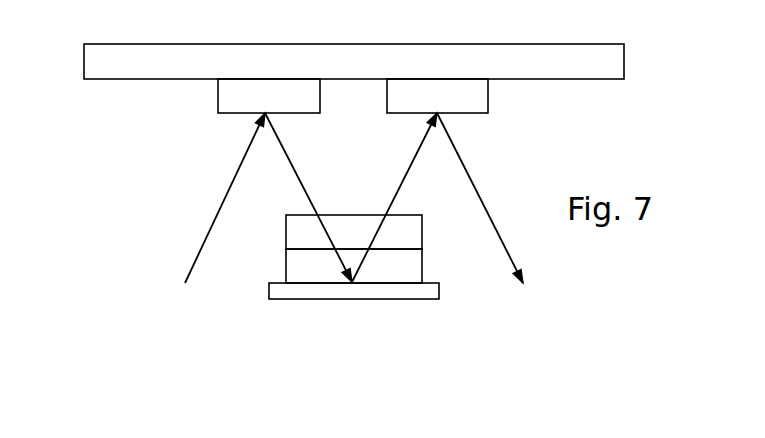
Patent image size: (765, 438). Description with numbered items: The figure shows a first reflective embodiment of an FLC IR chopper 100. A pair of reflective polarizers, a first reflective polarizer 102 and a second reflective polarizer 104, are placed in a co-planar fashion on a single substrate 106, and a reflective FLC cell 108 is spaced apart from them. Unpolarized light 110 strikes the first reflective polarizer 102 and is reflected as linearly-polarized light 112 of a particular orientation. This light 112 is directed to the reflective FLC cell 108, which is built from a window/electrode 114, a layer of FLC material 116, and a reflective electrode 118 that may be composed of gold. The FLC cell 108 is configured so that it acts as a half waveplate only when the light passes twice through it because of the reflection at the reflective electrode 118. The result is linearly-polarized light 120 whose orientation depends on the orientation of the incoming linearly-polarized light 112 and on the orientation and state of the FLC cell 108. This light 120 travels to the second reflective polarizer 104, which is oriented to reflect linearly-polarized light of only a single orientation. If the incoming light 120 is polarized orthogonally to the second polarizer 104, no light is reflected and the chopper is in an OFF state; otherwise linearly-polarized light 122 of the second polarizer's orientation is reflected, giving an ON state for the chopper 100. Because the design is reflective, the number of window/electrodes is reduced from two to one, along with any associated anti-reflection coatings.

The FLC IR chopper 100 is at (104, 184).
The first reflective polarizer 102 is at (252, 94).
The second reflective polarizer 104 is at (425, 92).
The substrate 106 is at (550, 62).
The reflective FLC cell 108 is at (260, 255).
The unpolarized light 110 is at (218, 208).
The linearly-polarized light 112 is at (307, 178).
The window/electrode 114 is at (410, 233).
The layer of FLC material 116 is at (410, 269).
The reflective electrode 118 is at (402, 290).
The linearly-polarized light 120 is at (402, 188).
The linearly-polarized light 122 is at (475, 188).